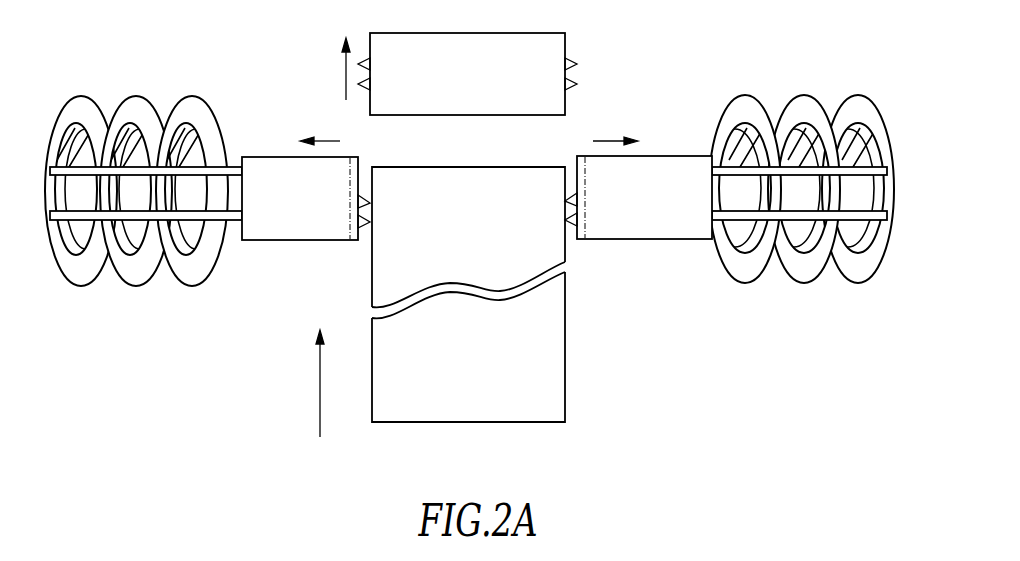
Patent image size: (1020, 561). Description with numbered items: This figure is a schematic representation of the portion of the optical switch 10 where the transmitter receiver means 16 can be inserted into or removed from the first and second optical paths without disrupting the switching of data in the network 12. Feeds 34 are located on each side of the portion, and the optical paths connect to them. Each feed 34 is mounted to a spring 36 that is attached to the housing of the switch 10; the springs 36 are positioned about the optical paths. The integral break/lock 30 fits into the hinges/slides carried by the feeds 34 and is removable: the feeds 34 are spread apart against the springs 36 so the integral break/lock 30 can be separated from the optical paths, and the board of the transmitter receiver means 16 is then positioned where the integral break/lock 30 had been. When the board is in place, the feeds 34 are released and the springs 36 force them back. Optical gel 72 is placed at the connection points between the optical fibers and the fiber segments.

The optical switch 10 is at (469, 280).
The network 12 is at (448, 347).
The transmitter receiver means 16 is at (375, 440).
The integral break/lock 30 is at (586, 41).
The feeds 34 is at (272, 250).
The spring 36 is at (166, 296).
The optical gel 72 is at (362, 250).